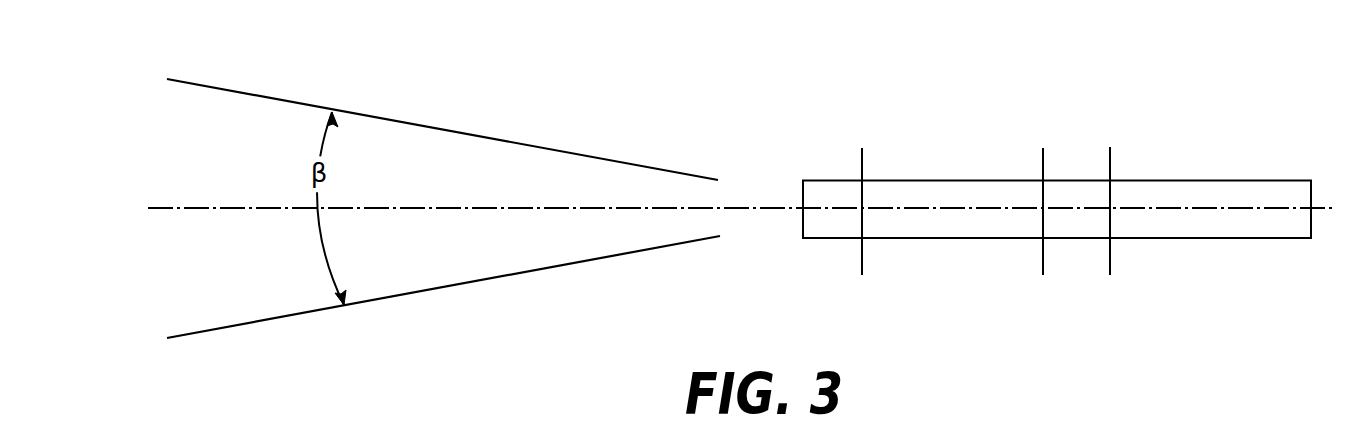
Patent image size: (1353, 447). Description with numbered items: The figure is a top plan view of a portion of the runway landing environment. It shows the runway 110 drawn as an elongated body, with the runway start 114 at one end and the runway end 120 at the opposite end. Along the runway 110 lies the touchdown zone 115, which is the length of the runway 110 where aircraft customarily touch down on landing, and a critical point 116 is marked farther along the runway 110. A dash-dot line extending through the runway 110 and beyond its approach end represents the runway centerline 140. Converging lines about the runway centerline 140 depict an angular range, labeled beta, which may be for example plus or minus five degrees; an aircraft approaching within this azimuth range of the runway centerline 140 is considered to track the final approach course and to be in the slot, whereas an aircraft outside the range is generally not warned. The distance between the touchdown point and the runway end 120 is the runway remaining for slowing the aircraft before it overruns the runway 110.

The runway 110 is at (1008, 126).
The runway start 114 is at (803, 222).
The touchdown zone 115 is at (1043, 279).
The critical point 116 is at (1110, 287).
The runway end 120 is at (1311, 245).
The runway centerline 140 is at (502, 203).